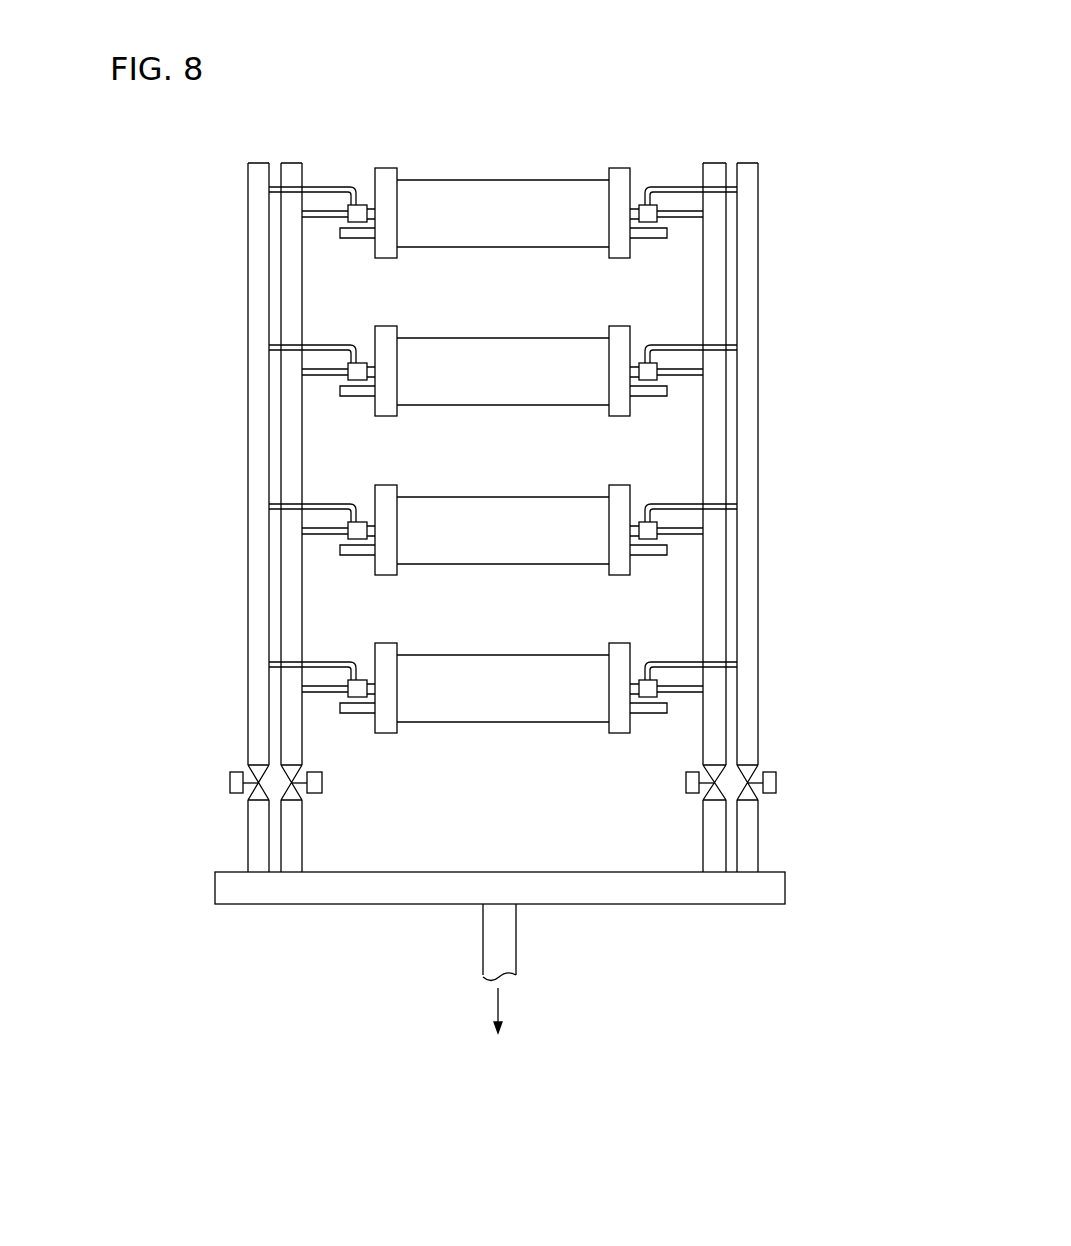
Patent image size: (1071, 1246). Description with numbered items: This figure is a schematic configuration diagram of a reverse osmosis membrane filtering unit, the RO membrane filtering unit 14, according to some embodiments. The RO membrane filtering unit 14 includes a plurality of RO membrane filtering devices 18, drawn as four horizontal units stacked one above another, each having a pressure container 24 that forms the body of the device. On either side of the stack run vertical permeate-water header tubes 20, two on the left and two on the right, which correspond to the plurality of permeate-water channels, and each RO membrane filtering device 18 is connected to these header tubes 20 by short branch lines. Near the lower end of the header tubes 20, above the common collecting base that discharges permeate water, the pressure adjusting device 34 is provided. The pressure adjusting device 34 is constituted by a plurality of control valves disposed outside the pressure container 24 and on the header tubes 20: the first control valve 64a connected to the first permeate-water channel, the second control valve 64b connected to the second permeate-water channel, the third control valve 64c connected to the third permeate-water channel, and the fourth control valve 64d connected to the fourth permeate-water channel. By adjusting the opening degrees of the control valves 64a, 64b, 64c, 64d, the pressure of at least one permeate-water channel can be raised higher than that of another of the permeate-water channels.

The RO membrane filtering unit 14 is at (730, 72).
The RO membrane filtering device 18 is at (503, 410).
The permeate-water header tube 20 is at (259, 163).
The pressure container 24 is at (525, 179).
The pressure adjusting device 34 is at (782, 745).
The first control valve 64a is at (230, 783).
The second control valve 64b is at (322, 783).
The third control valve 64c is at (686, 783).
The fourth control valve 64d is at (776, 783).